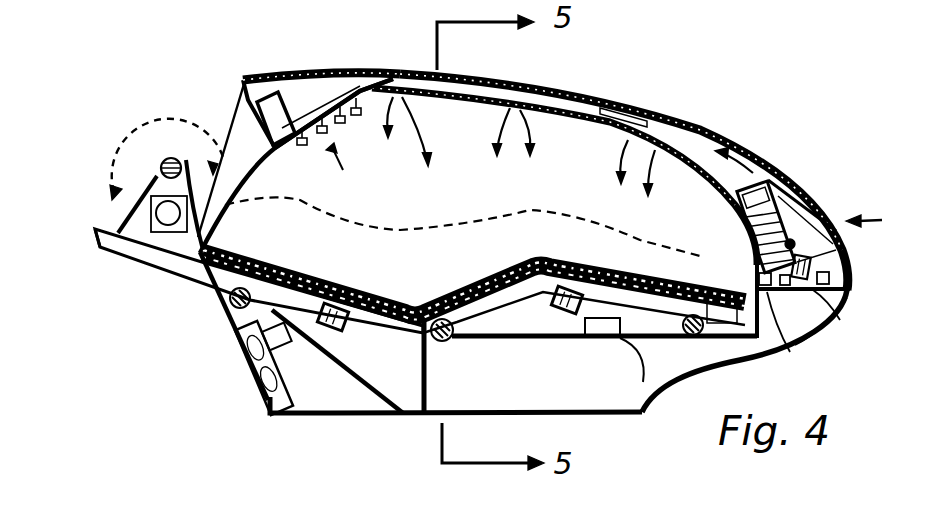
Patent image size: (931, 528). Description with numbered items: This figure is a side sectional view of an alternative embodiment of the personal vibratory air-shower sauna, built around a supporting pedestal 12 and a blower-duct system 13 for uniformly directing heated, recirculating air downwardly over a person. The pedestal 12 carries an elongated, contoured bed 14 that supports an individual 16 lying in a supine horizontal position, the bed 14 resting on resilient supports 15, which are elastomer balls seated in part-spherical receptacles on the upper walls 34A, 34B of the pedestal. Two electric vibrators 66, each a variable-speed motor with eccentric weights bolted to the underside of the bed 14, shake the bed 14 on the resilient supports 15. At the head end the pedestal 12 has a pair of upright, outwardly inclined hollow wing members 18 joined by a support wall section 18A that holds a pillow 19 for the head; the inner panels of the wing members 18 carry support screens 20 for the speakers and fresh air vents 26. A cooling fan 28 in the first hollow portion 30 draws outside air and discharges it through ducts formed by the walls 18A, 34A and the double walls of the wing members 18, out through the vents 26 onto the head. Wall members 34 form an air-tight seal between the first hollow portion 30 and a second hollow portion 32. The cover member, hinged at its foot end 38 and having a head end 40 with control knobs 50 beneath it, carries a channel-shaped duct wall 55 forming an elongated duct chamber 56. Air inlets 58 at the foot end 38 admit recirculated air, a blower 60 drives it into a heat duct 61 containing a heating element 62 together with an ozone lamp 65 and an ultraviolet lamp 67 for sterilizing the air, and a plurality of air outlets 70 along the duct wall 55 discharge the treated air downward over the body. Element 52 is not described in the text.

The supporting pedestal 12 is at (510, 416).
The blower-duct system 13 is at (875, 202).
The bed 14 is at (662, 272).
The resilient supports 15 is at (237, 308).
The individual 16 is at (396, 226).
The hollow wing members 18 is at (118, 182).
The support wall section 18A is at (118, 256).
The pillow 19 is at (125, 208).
The support screens 20 is at (161, 260).
The fresh air vents 26 is at (173, 158).
The cooling fan 28 is at (250, 375).
The first hollow portion 30 is at (303, 404).
The second hollow portion 32 is at (598, 416).
The wall members 34 is at (368, 415).
The upper wall 34A is at (212, 300).
The upper wall 34B is at (649, 387).
The foot end 38 is at (838, 244).
The head end 40 is at (300, 74).
The control knobs 50 is at (325, 137).
The compartment floor 52 is at (850, 291).
The channel-shaped duct wall 55 is at (574, 130).
The duct chamber 56 is at (648, 120).
The air inlets 58 is at (780, 338).
The blower 60 is at (818, 321).
The heat duct 61 is at (812, 199).
The heating element 62 is at (786, 170).
The ozone lamp 65 is at (744, 246).
The electric vibrator 66 is at (347, 330).
The ultraviolet lamp 67 is at (736, 232).
The air outlets 70 is at (397, 72).